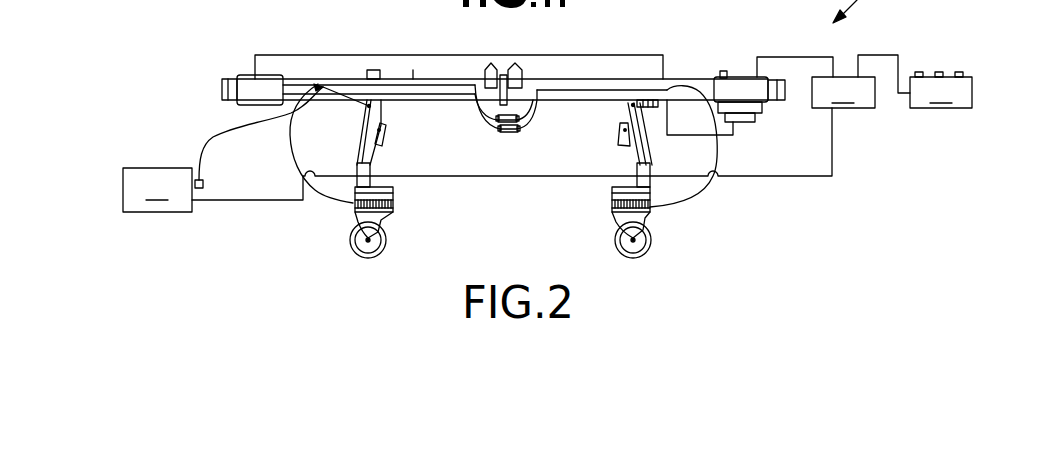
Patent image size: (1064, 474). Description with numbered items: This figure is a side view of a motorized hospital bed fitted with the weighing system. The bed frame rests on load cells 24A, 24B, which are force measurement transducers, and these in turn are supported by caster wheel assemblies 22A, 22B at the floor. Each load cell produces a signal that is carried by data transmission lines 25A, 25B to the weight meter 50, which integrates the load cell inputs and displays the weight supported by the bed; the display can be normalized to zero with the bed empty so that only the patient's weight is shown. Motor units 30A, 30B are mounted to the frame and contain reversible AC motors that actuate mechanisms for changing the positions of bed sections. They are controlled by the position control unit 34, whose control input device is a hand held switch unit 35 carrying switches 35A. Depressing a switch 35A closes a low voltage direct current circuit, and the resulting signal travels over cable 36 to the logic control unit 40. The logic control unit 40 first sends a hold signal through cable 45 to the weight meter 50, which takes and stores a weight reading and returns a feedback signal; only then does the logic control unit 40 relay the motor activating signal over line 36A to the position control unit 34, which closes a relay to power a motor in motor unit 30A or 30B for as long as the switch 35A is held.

The caster wheel assembly 22A is at (351, 231).
The caster wheel assembly 22B is at (655, 238).
The load cell 24A is at (394, 200).
The load cell 24B is at (610, 199).
The data transmission line 25A is at (292, 148).
The data transmission line 25B is at (700, 197).
The motor unit 30A is at (740, 77).
The motor unit 30B is at (242, 76).
The position control unit 34 is at (748, 122).
The hand held switch unit 35 is at (941, 90).
The switch 35A is at (960, 72).
The cable 36 is at (885, 55).
The line 36A is at (800, 57).
The logic control unit 40 is at (843, 92).
The cable 45 is at (834, 160).
The weight meter 50 is at (247, 148).